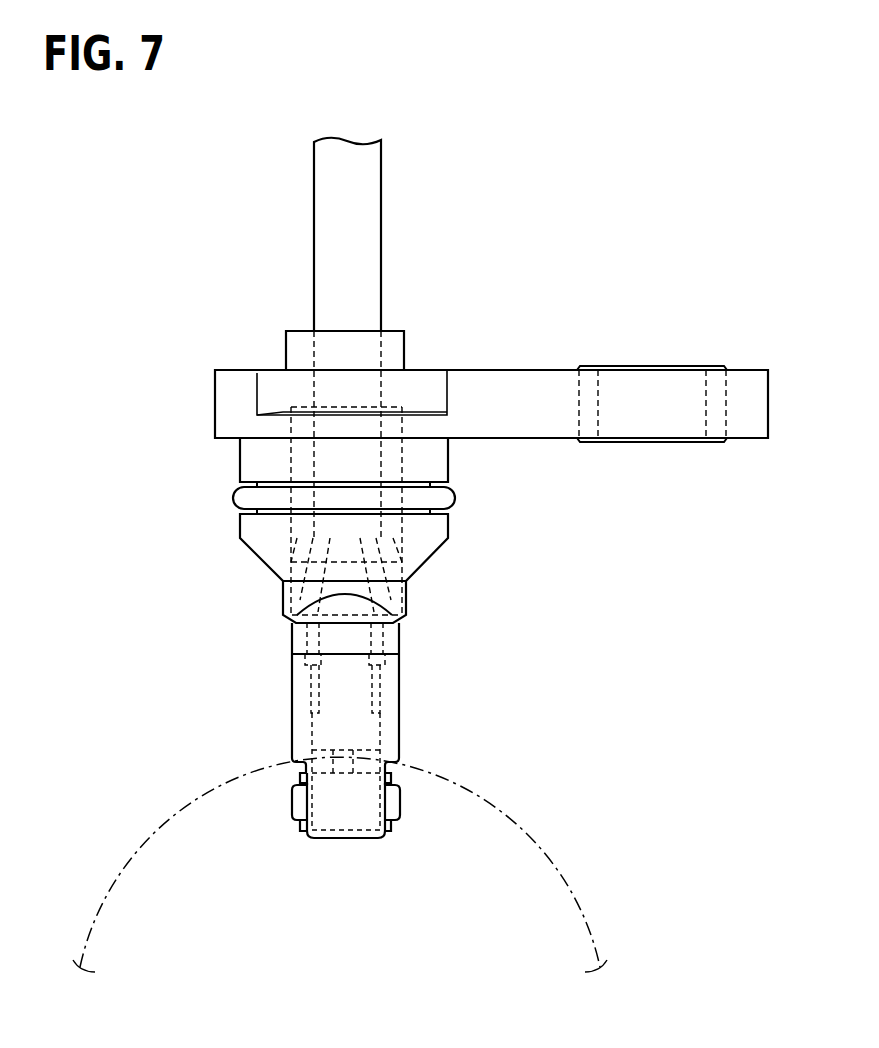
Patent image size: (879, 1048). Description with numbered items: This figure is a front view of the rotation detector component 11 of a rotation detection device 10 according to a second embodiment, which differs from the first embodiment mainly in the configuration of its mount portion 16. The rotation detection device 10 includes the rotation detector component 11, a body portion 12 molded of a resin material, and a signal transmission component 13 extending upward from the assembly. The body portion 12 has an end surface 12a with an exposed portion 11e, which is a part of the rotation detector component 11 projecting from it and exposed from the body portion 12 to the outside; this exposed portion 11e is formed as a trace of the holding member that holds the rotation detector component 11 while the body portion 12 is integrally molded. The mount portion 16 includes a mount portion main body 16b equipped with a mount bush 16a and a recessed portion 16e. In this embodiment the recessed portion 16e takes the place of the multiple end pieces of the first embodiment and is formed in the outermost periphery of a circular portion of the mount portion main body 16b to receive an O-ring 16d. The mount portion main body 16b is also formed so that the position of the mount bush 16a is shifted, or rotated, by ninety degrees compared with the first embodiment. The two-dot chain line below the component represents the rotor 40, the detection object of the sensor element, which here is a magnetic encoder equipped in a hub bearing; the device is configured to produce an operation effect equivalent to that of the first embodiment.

The rotation detection device 10 is at (431, 267).
The rotation detector component 11 is at (346, 800).
The exposed portion 11e is at (295, 795).
The body portion 12 is at (290, 687).
The end surface 12a is at (296, 767).
The signal transmission component 13 is at (332, 235).
The mount portion 16 is at (514, 367).
The mount bush 16a is at (717, 427).
The mount portion main body 16b is at (517, 413).
The O-ring 16d is at (443, 495).
The recessed portion 16e is at (440, 517).
The rotor 40 is at (538, 838).